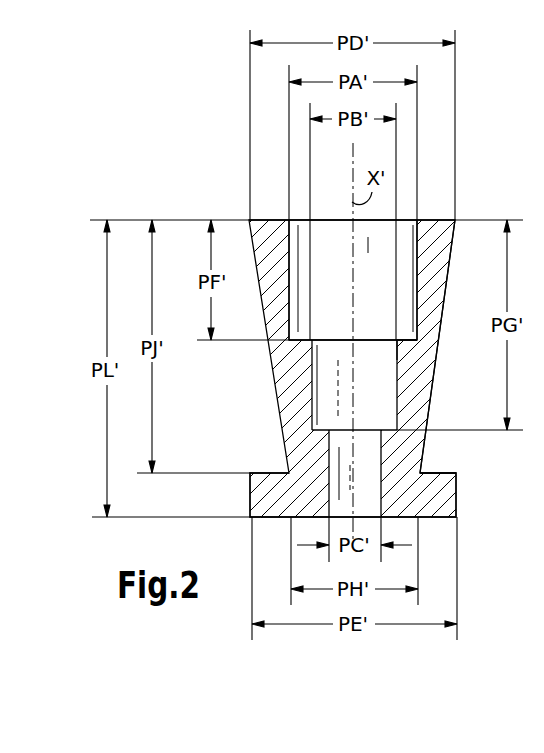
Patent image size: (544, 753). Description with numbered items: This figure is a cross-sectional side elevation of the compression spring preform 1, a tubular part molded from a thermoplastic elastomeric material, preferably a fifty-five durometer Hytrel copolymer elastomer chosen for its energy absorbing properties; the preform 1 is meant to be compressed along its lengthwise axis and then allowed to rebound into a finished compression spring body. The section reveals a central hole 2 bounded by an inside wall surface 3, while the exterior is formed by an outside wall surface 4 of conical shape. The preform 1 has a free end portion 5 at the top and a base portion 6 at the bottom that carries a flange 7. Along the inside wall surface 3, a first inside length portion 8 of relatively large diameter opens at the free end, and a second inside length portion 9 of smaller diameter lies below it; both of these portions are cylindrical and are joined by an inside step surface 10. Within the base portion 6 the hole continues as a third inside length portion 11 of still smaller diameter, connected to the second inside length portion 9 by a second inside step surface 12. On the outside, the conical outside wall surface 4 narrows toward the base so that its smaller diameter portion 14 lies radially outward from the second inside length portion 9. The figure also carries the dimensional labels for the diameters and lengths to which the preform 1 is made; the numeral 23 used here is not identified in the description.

The compression spring preform 1 is at (468, 170).
The central hole 2 is at (367, 291).
The inside wall surface 3 is at (419, 284).
The outside wall surface 4 is at (444, 303).
The free end portion 5 is at (440, 243).
The base portion 6 is at (442, 493).
The flange 7 is at (443, 473).
The first inside length portion 8 is at (291, 277).
The second inside length portion 9 is at (312, 403).
The inside step surface 10 is at (302, 339).
The third inside length portion 11 is at (378, 455).
The second inside step surface 12 is at (313, 425).
The smaller diameter portion 14 is at (397, 343).
The top end surface 23 is at (248, 230).